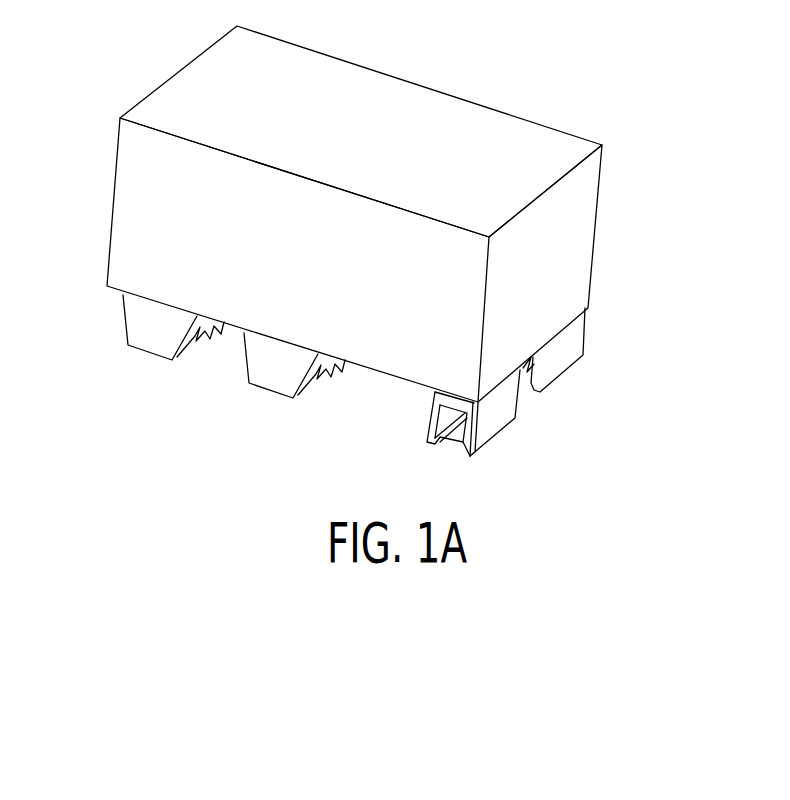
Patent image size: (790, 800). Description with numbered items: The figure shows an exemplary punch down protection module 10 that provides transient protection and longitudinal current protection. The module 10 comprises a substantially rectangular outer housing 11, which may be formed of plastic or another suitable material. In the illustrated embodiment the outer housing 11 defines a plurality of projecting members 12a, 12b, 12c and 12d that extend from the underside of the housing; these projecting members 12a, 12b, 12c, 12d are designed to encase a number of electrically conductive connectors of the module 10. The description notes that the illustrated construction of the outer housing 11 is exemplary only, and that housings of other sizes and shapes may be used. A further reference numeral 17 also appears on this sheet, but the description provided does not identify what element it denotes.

The punch down protection module 10 is at (545, 31).
The outer housing 11 is at (380, 214).
The projecting member 12a is at (503, 433).
The projecting member 12b is at (590, 366).
The projecting member 12c is at (277, 383).
The projecting member 12d is at (157, 343).
The circuit board 17 is at (715, 775).